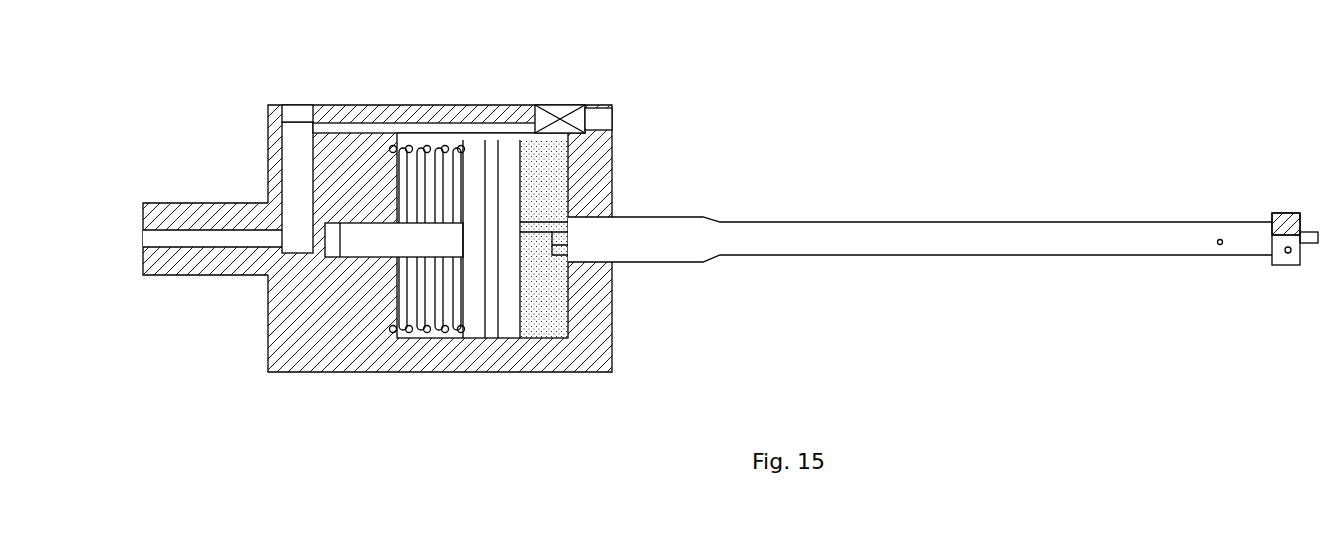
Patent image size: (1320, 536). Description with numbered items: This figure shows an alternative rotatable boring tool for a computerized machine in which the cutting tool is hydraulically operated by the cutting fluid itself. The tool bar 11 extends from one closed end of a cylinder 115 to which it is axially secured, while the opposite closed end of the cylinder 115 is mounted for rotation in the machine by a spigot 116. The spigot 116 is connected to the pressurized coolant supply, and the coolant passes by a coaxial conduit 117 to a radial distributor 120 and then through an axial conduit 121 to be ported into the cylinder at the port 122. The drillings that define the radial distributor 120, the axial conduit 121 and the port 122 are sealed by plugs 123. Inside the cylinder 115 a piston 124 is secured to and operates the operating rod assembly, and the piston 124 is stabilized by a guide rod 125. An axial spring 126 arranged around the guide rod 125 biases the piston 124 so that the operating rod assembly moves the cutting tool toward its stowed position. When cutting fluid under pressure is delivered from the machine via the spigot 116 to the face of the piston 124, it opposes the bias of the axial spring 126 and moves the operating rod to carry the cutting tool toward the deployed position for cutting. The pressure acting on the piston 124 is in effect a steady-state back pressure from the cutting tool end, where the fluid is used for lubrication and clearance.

The boring bar body 11 is at (752, 252).
The cylinder 115 is at (463, 372).
The spigot 116 is at (220, 267).
The coaxial conduit 117 is at (223, 238).
The radial distributor 120 is at (297, 180).
The axial conduit 121 is at (377, 130).
The port 122 is at (548, 127).
The plugs 123 is at (298, 112).
The piston 124 is at (512, 327).
The guide rod 125 is at (367, 238).
The axial spring 126 is at (415, 335).